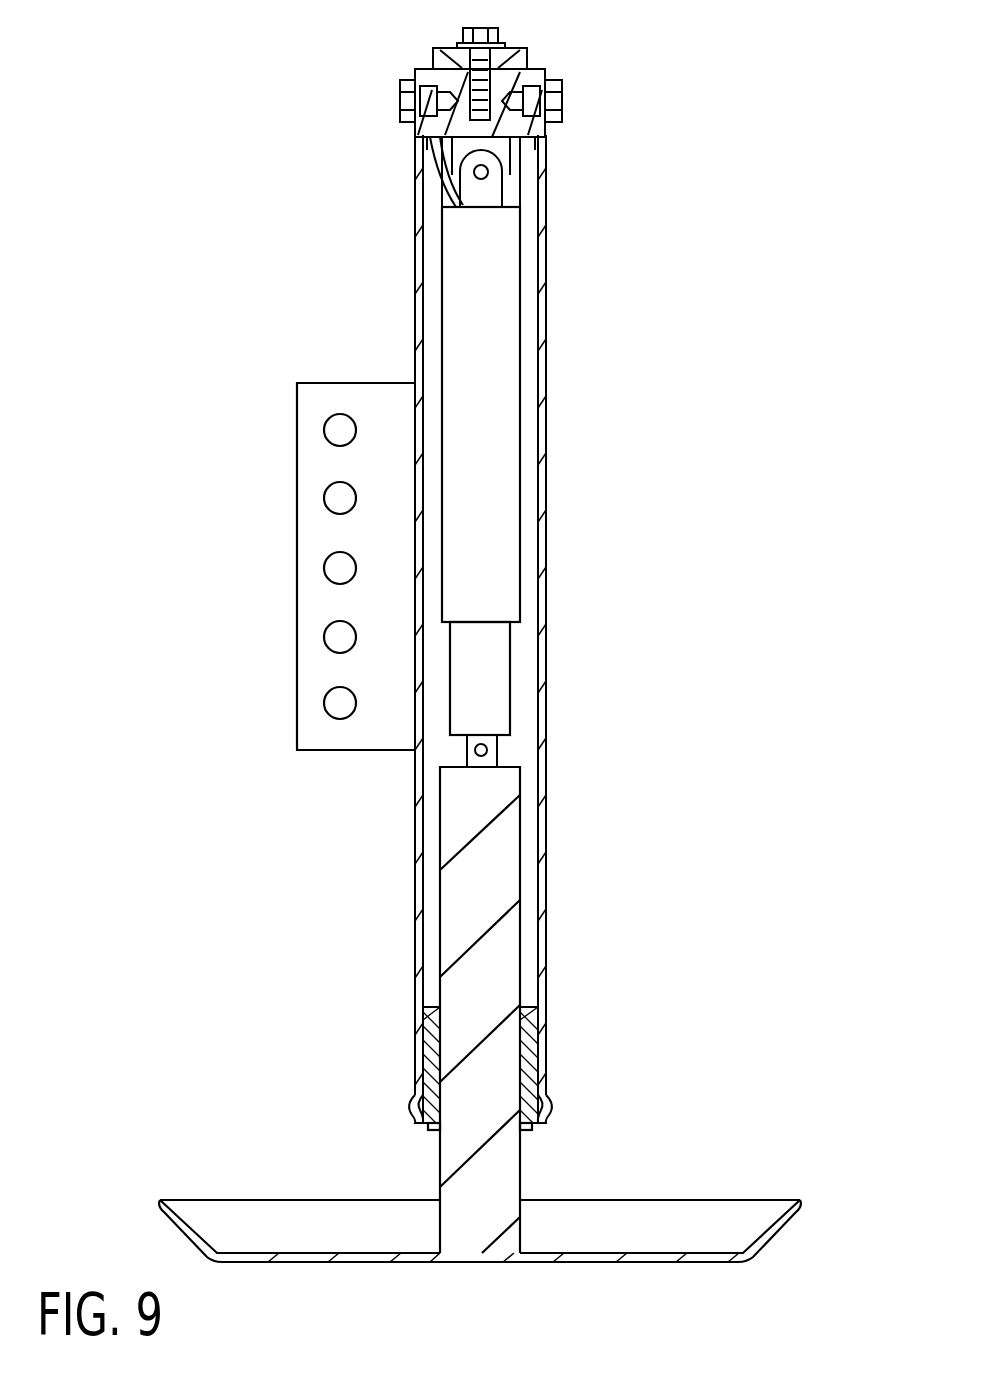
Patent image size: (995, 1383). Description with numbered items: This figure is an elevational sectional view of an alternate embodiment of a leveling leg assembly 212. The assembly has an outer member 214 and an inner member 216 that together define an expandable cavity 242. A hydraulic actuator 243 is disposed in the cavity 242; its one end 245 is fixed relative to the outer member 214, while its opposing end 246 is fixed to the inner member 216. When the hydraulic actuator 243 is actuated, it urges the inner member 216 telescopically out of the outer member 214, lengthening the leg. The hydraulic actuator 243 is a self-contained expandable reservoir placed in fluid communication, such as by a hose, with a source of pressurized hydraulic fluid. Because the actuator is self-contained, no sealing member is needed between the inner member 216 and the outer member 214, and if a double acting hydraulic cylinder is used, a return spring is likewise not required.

The leveling leg assembly 212 is at (287, 63).
The outer member 214 is at (548, 690).
The inner member 216 is at (520, 1172).
The expandable cavity 242 is at (525, 656).
The hydraulic actuator 243 is at (525, 318).
The one end of the hydraulic actuator 245 is at (498, 185).
The opposing end of the hydraulic actuator 246 is at (500, 750).